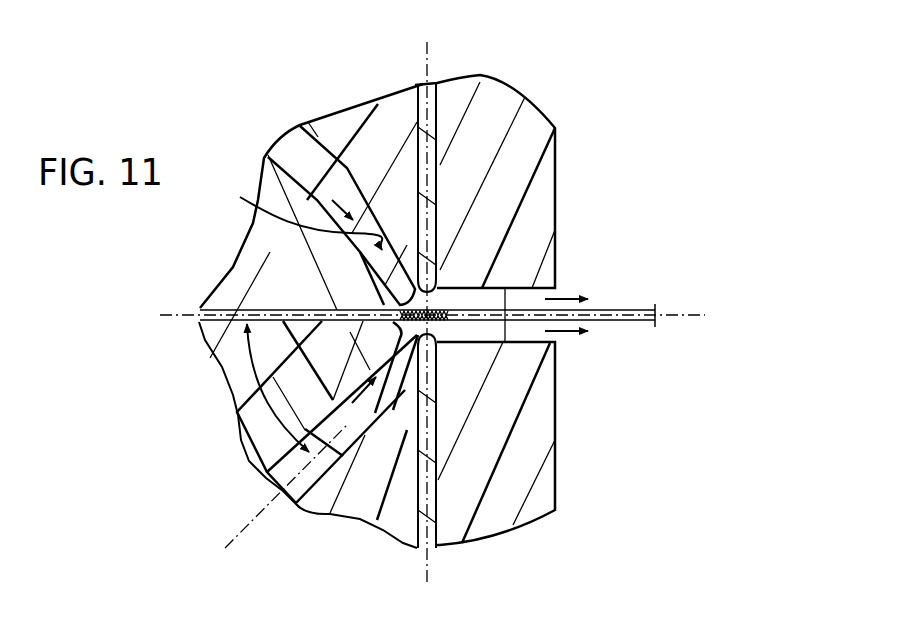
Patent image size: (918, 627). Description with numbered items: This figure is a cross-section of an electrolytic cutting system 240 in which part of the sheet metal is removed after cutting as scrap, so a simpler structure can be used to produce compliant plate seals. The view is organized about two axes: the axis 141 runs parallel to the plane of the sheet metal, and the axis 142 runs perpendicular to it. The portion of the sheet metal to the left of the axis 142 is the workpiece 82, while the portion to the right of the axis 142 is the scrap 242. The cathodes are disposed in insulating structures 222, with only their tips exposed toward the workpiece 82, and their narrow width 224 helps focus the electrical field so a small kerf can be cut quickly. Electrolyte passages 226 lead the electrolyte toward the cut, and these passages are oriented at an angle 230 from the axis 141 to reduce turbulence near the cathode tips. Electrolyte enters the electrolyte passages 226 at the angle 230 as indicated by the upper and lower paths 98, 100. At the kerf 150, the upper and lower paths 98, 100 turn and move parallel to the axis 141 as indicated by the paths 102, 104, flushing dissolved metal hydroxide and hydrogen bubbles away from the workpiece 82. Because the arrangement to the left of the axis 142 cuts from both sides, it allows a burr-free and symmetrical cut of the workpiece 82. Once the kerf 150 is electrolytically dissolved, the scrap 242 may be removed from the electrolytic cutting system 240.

The workpiece 82 is at (335, 307).
The path 98 is at (349, 200).
The path 100 is at (372, 432).
The path 102 is at (568, 297).
The path 104 is at (568, 335).
The axis 141 is at (688, 310).
The axis 142 is at (427, 64).
The kerf 150 is at (453, 342).
The insulating structures 222 is at (502, 95).
The width 224 is at (518, 340).
The electrolyte passages 226 is at (289, 216).
The angle 230 is at (257, 348).
The electrolytic cutting system 240 is at (478, 50).
The scrap 242 is at (468, 312).